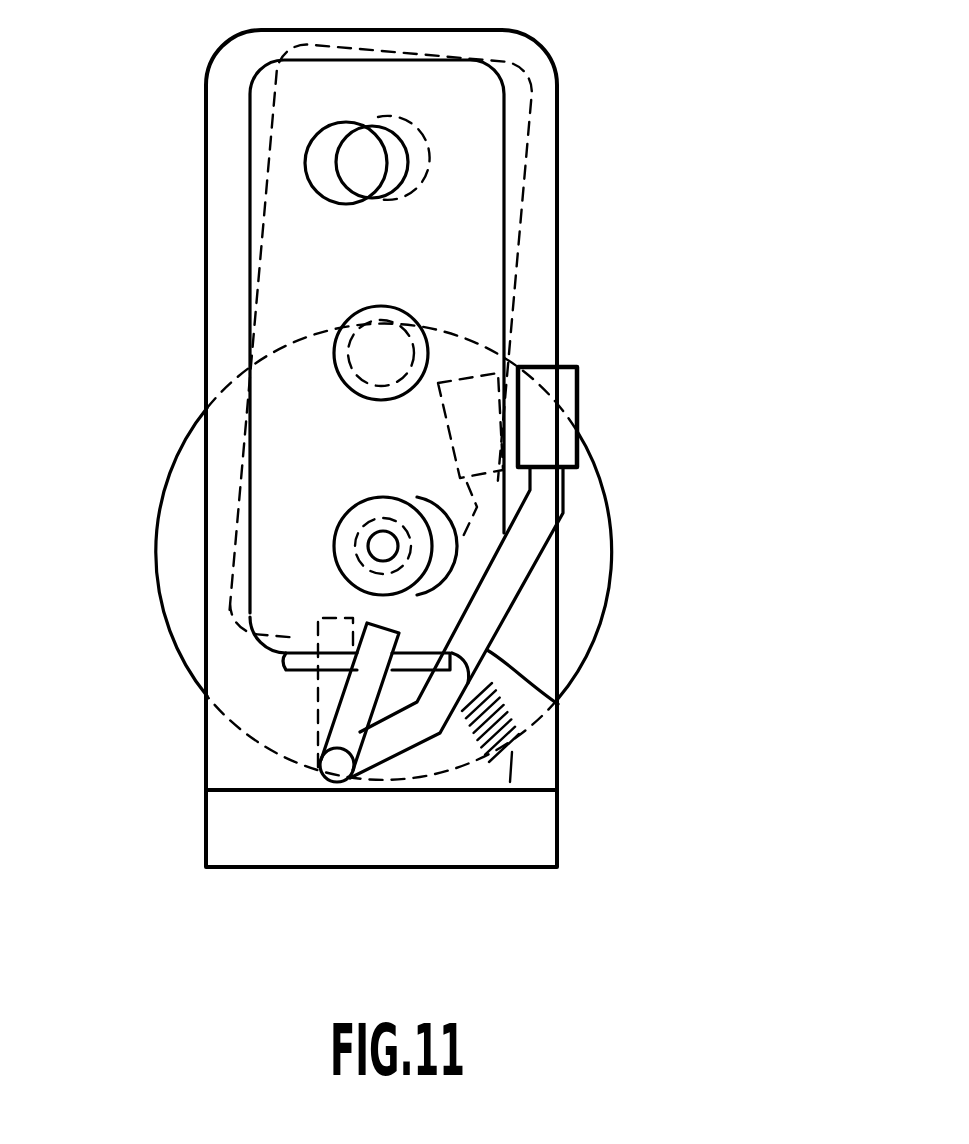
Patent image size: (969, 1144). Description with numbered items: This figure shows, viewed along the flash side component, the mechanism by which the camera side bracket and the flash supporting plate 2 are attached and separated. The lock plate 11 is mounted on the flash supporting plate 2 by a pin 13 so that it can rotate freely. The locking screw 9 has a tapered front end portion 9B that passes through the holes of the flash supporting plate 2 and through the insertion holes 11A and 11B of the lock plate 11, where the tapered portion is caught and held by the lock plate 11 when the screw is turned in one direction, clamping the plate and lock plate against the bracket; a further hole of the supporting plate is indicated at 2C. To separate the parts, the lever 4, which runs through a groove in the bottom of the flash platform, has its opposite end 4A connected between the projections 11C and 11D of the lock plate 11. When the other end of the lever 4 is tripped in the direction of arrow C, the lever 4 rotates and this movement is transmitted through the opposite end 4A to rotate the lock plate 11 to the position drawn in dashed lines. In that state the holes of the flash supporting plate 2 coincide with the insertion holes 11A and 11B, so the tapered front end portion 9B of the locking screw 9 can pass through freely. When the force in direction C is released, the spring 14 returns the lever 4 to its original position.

The flash supporting plate 2 is at (295, 830).
The shaft hole 2C is at (378, 168).
The lever 4 is at (540, 527).
The opposite end of the lever 4A is at (337, 700).
The locking screw 9 is at (186, 437).
The tapered front end portion 9B is at (360, 531).
The lock plate 11 is at (284, 110).
The insertion hole 11A is at (304, 166).
The insertion hole 11B is at (425, 503).
The projection 11C is at (293, 660).
The projection 11D is at (557, 706).
The pin 13 is at (370, 347).
The spring 14 is at (512, 752).
The arrow C is at (580, 392).